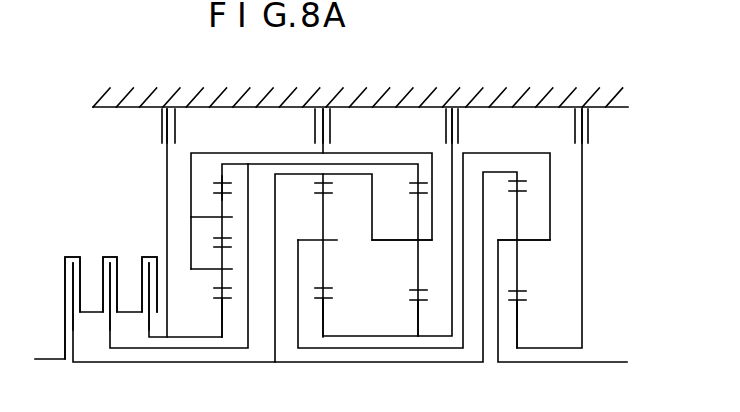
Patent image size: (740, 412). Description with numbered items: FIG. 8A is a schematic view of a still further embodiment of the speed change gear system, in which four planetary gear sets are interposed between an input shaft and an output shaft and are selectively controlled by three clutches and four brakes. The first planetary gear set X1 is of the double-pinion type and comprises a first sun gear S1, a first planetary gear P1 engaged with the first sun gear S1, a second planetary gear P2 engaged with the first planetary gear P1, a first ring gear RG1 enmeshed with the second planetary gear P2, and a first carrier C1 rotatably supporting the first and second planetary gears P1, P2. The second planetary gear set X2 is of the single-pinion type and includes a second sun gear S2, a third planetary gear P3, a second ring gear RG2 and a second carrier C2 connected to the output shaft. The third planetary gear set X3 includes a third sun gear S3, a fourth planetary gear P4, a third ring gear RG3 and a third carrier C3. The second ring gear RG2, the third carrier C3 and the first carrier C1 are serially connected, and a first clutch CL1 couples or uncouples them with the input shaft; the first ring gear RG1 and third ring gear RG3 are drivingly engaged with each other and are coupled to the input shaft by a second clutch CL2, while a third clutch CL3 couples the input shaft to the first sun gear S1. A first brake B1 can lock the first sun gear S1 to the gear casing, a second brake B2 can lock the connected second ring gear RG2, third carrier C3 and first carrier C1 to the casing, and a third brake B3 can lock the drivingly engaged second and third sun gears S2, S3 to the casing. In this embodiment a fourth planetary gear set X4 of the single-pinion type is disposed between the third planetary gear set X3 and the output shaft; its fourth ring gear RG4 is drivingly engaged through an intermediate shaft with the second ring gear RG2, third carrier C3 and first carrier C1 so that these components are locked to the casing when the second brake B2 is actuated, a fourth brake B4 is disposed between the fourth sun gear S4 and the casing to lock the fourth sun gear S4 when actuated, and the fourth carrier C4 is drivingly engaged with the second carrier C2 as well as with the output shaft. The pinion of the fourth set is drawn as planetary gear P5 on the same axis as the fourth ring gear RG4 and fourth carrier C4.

The first clutch CL1 is at (46, 292).
The second clutch CL2 is at (91, 278).
The third clutch CL3 is at (139, 278).
The first brake B1 is at (183, 126).
The second brake B2 is at (338, 126).
The third brake B3 is at (469, 126).
The fourth brake B4 is at (600, 126).
The first ring gear RG1 is at (224, 173).
The second ring gear RG2 is at (326, 178).
The third ring gear RG3 is at (413, 178).
The fourth ring gear RG4 is at (518, 175).
The first planetary gear P1 is at (222, 282).
The second planetary gear P2 is at (223, 198).
The third planetary gear P3 is at (322, 272).
The fourth planetary gear P4 is at (418, 281).
The fifth planet pinion P5 is at (517, 280).
The first carrier C1 is at (208, 267).
The second carrier C2 is at (307, 240).
The third carrier C3 is at (395, 242).
The fourth carrier C4 is at (537, 241).
The first planetary gear set X1 is at (221, 309).
The second planetary gear set X2 is at (320, 309).
The third planetary gear set X3 is at (416, 308).
The fourth planetary gear set X4 is at (515, 311).
The first sun gear S1 is at (224, 302).
The second sun gear S2 is at (325, 303).
The third sun gear S3 is at (420, 304).
The fourth sun gear S4 is at (520, 305).